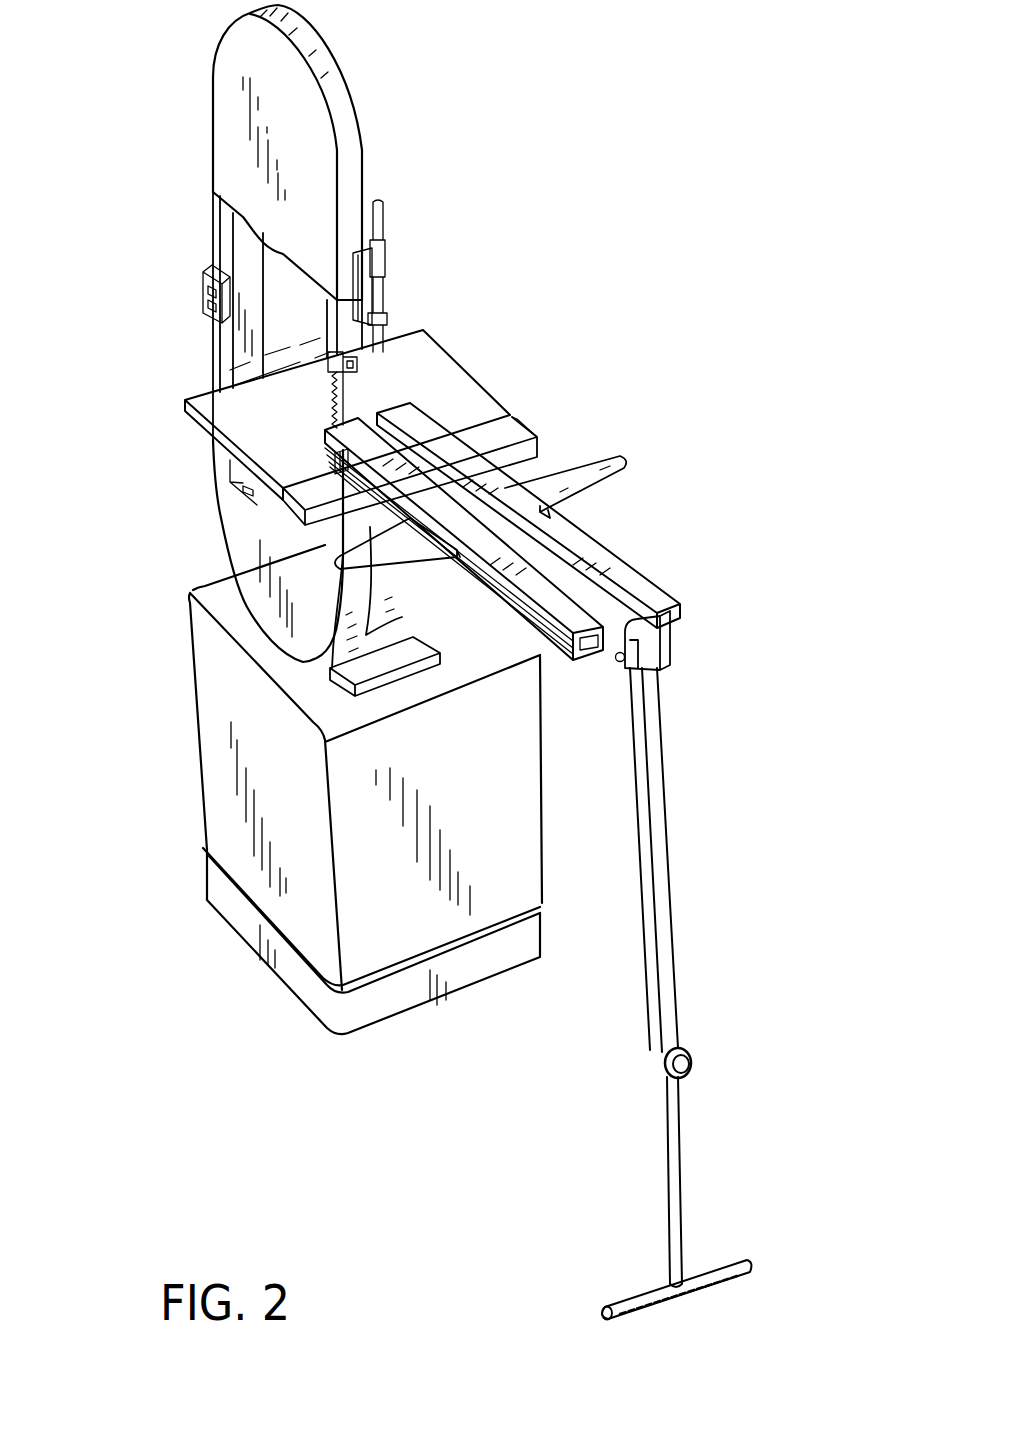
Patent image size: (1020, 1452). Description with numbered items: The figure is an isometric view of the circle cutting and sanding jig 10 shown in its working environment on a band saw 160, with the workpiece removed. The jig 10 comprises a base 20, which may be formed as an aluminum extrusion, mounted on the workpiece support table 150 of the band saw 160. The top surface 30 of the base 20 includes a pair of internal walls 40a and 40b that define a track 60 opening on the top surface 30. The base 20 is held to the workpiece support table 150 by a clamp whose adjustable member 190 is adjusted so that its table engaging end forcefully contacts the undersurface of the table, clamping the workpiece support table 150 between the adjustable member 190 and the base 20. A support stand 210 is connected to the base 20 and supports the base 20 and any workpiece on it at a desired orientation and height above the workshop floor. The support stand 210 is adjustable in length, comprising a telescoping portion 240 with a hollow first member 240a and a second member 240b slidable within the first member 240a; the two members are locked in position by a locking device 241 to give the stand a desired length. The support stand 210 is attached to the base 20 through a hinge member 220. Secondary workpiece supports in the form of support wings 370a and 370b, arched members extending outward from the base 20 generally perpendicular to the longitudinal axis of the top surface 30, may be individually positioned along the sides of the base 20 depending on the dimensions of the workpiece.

The circle cutting and sanding jig 10 is at (598, 265).
The base 20 is at (446, 584).
The top surface 30 is at (642, 591).
The internal wall 40a is at (598, 662).
The internal wall 40b is at (553, 560).
The track 60 is at (625, 654).
The workpiece support table 150 is at (418, 460).
The band saw 160 is at (405, 241).
The adjustable member 190 is at (350, 528).
The support stand 210 is at (723, 994).
The hinge member 220 is at (703, 666).
The telescoping portion 240 is at (723, 994).
The first member 240a is at (672, 937).
The second member 240b is at (680, 1173).
The locking device 241 is at (693, 1067).
The support wing 370a is at (338, 553).
The support wing 370b is at (605, 460).